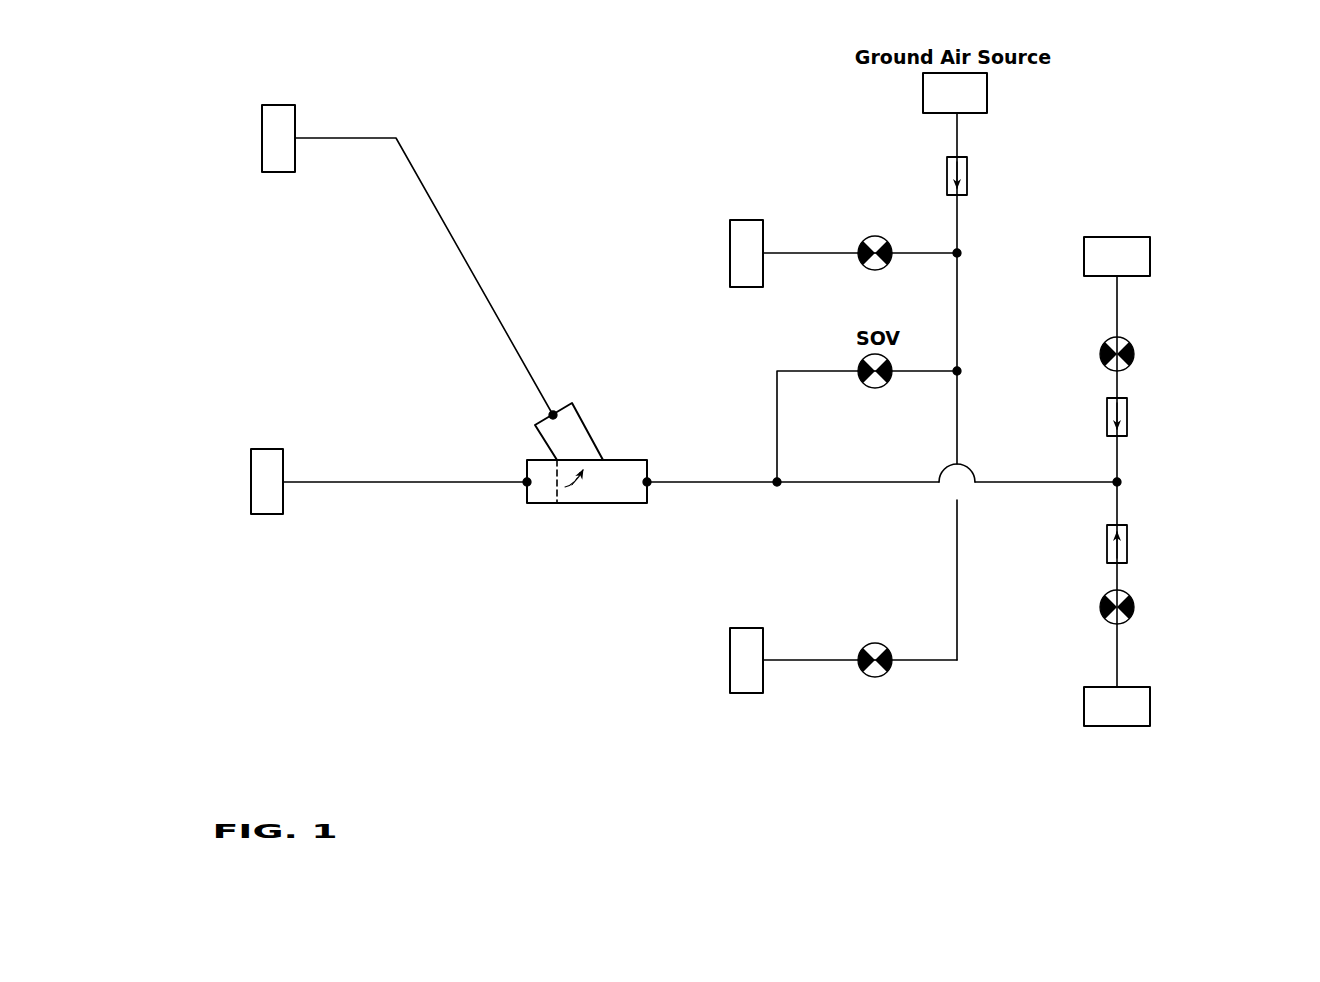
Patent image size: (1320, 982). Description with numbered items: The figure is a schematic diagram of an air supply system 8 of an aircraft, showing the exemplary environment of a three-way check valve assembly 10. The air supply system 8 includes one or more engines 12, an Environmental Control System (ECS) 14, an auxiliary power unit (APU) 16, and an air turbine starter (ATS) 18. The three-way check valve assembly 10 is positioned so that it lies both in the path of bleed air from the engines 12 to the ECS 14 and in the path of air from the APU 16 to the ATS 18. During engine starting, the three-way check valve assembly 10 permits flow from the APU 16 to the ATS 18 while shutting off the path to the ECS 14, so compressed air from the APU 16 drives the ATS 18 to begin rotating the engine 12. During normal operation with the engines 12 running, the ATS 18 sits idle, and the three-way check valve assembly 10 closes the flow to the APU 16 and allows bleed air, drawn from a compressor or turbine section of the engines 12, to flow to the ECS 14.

The air supply system 8 is at (538, 338).
The 3-way check valve assembly 10 is at (672, 500).
The engines 12 is at (1150, 252).
The Environmental Control System (ECS) 14 is at (281, 105).
The auxiliary power unit (APU) 16 is at (264, 517).
The air turbine starter (ATS) 18 is at (730, 250).